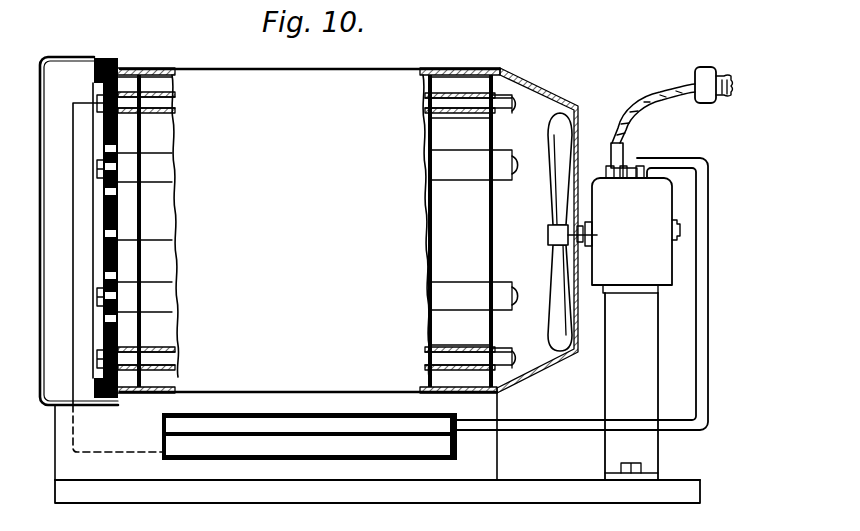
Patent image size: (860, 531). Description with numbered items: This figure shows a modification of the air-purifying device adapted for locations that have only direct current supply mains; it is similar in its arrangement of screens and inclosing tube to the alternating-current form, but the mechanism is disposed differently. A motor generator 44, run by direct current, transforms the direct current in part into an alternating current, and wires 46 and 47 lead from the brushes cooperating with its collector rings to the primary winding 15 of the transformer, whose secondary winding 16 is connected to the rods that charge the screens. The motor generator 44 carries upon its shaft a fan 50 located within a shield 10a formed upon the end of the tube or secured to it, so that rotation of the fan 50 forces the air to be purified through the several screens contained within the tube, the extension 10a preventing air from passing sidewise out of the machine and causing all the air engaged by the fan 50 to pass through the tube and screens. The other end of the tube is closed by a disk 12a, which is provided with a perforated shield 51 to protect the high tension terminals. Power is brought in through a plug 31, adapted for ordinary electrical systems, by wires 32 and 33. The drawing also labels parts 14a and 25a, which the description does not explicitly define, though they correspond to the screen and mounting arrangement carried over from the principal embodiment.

The shield 10a is at (532, 78).
The disk 12a is at (118, 67).
The commutator segments 14a is at (107, 233).
The primary winding 15 is at (328, 423).
The secondary winding 16 is at (435, 446).
The field core 25a is at (491, 229).
The plug 31 is at (727, 75).
The wire 32 is at (610, 152).
The wire 33 is at (626, 150).
The motor generator 44 is at (632, 229).
The wire 46 is at (698, 336).
The wire 47 is at (708, 290).
The fan 50 is at (556, 190).
The perforated shield 51 is at (42, 90).